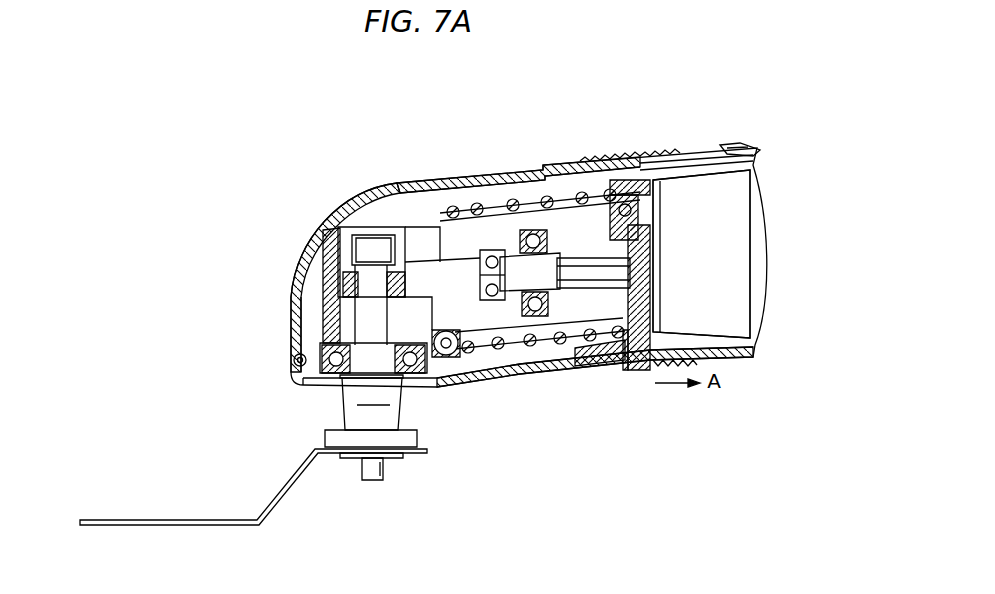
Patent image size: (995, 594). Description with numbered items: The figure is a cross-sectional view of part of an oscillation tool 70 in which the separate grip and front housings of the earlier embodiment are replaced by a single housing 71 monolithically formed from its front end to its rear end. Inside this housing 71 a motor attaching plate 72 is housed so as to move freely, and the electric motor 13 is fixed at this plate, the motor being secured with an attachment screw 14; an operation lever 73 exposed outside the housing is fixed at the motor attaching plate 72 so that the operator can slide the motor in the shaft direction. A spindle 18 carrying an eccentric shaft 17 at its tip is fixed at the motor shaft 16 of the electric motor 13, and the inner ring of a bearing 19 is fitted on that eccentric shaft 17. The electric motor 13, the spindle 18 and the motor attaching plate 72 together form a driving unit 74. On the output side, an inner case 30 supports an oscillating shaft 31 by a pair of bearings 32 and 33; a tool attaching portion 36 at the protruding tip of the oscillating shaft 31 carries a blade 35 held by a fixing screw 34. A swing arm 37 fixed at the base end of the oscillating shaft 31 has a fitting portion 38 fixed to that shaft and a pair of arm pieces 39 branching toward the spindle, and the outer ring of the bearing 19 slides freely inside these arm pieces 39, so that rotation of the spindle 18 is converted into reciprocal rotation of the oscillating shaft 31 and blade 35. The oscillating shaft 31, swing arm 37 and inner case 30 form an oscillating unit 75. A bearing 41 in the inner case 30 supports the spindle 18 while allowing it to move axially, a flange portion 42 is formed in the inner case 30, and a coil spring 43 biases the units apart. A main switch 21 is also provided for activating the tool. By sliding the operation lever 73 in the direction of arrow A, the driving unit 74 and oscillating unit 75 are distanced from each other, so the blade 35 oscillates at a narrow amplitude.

The oscillation tool 70 is at (205, 190).
The housing 71 is at (342, 210).
The oscillating unit 75 is at (317, 247).
The driving unit 74 is at (752, 190).
The main switch 21 is at (645, 151).
The motor shaft 16 is at (592, 192).
The electric motor 13 is at (725, 288).
The attachment screw 14 is at (640, 208).
The spindle 18 is at (567, 205).
The bearing 41 is at (543, 190).
The coil spring 43 is at (537, 352).
The flange portion 42 is at (464, 358).
The eccentric shaft 17 is at (497, 300).
The bearing 19 is at (491, 275).
The swing arm 37 is at (398, 192).
The fitting portion 38 is at (408, 226).
The arm pieces 39 is at (437, 278).
The bearing 32 is at (343, 255).
The inner case 30 is at (345, 294).
The bearing 33 is at (293, 359).
The oscillating shaft 31 is at (335, 395).
The tool attaching portion 36 is at (420, 440).
The blade 35 is at (178, 518).
The fixing screw 34 is at (384, 470).
The motor attaching plate 72 is at (640, 366).
The operation lever 73 is at (628, 372).